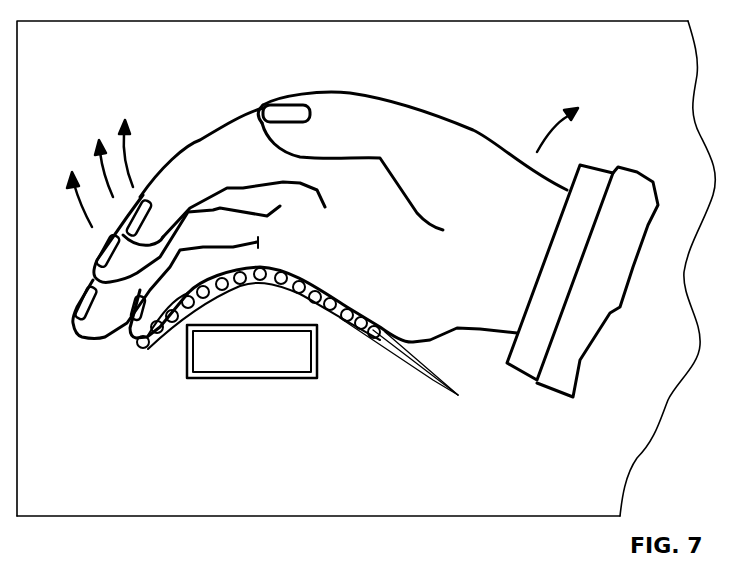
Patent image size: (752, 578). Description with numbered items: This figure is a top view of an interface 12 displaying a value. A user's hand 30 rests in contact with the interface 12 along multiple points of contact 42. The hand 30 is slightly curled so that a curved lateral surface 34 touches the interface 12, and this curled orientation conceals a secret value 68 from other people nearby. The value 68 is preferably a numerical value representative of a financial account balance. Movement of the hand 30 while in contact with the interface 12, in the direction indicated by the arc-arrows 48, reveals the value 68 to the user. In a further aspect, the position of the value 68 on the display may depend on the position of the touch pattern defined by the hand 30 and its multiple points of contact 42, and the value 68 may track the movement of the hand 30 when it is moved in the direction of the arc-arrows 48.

The interface 12 is at (69, 91).
The hand 30 is at (467, 140).
The curved lateral surface 34 is at (407, 340).
The points of contact 42 is at (411, 370).
The arc-arrows 48 is at (90, 213).
The secret value 68 is at (197, 367).